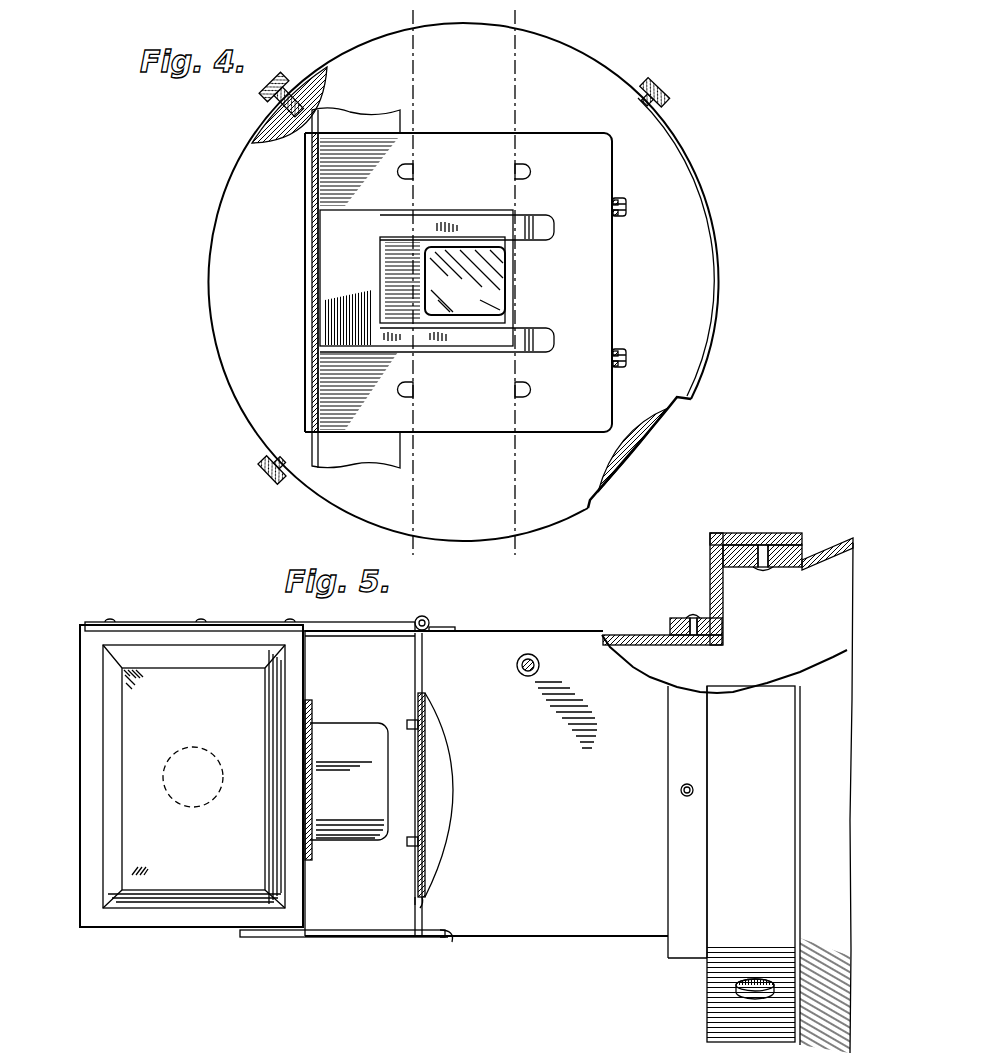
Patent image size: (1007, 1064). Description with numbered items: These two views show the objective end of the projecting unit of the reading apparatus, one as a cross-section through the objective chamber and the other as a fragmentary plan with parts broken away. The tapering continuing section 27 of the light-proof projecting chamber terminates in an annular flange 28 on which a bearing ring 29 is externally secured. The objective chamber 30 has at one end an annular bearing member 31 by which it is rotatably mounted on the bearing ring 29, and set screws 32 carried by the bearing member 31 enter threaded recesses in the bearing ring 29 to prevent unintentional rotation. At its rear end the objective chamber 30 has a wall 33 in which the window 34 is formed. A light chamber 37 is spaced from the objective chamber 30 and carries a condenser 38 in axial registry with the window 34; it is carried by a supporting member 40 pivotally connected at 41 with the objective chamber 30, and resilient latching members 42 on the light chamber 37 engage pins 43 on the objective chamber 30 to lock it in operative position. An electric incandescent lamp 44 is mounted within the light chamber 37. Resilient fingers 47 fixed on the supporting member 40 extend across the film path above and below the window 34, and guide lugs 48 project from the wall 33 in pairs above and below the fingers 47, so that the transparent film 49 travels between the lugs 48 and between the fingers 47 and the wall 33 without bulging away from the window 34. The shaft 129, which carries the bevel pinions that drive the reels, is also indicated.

In FIG. 5, the continuing section 27 is at (838, 565).
In FIG. 5, the annular flange 28 is at (740, 570).
In FIG. 5, the bearing ring 29 is at (808, 555).
In FIG. 5, the objective chamber 30 is at (576, 794).
In FIG. 4, the annular bearing member 31 is at (268, 108).
In FIG. 5, the annular bearing member 31 is at (768, 533).
In FIG. 4, the set screw 32 is at (672, 98).
In FIG. 5, the set screw 32 is at (748, 987).
In FIG. 4, the wall 33 is at (600, 172).
In FIG. 4, the window 34 is at (475, 308).
In FIG. 5, the window 34 is at (440, 776).
In FIG. 5, the light chamber 37 is at (191, 776).
In FIG. 5, the condenser 38 is at (346, 780).
In FIG. 4, the supporting member 40 is at (308, 252).
In FIG. 5, the supporting member 40 is at (390, 614).
In FIG. 5, the pivotal connection 41 is at (430, 620).
In FIG. 4, the resilient latching member 42 is at (624, 204).
In FIG. 5, the resilient latching member 42 is at (351, 931).
In FIG. 4, the pin 43 is at (626, 210).
In FIG. 5, the pin 43 is at (437, 946).
In FIG. 5, the electric incandescent lamp 44 is at (198, 808).
In FIG. 4, the resilient finger 47 is at (527, 327).
In FIG. 5, the resilient finger 47 is at (415, 860).
In FIG. 4, the guide lug 48 is at (515, 172).
In FIG. 5, the guide lug 48 is at (409, 721).
In FIG. 4, the transparent film 49 is at (518, 97).
In FIG. 5, the shaft 129 is at (540, 667).